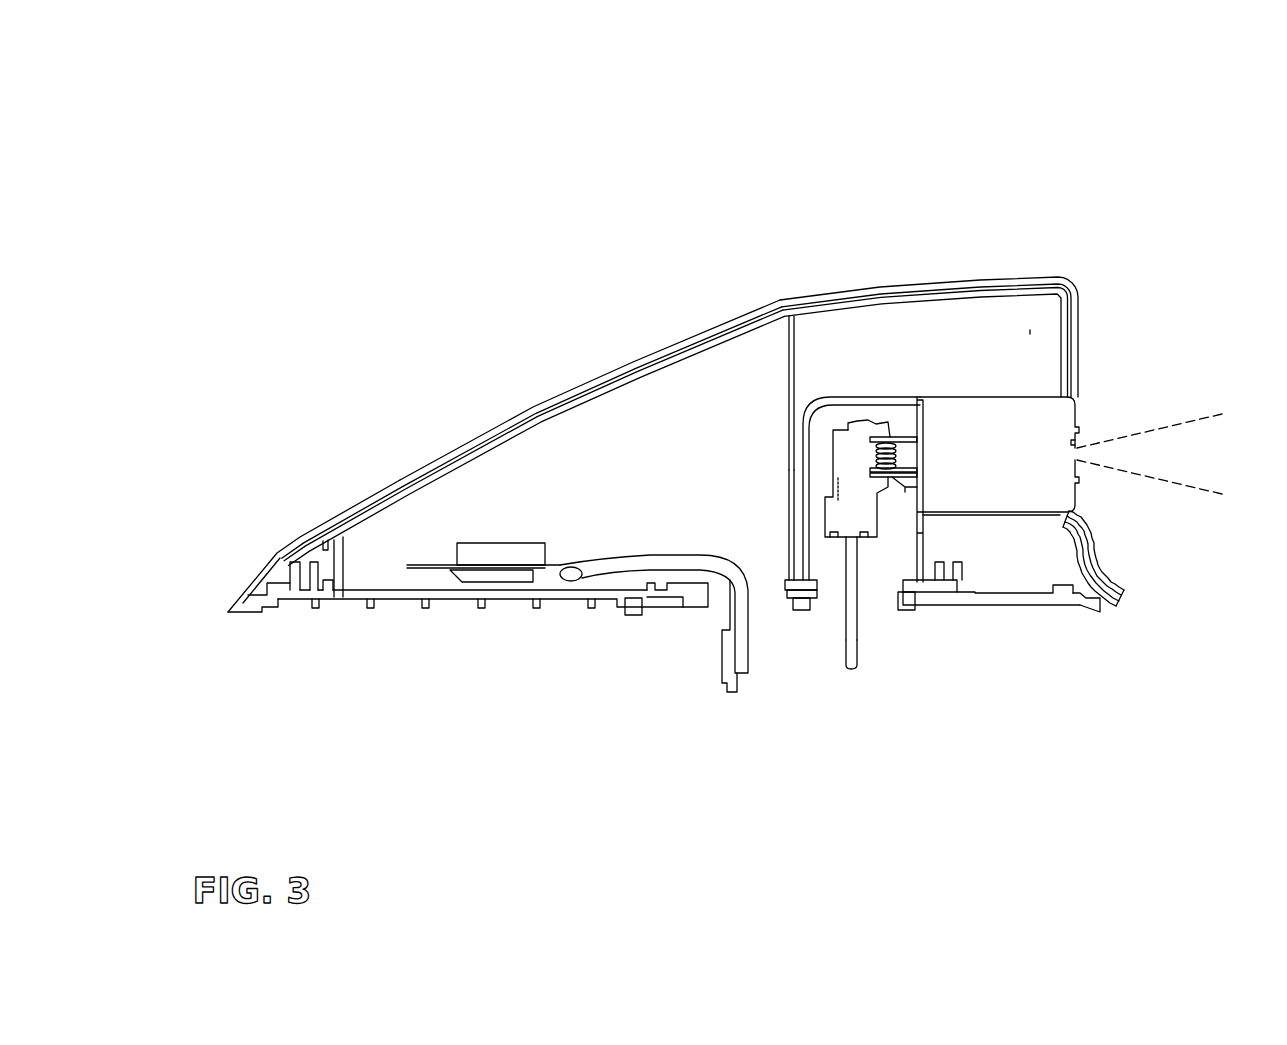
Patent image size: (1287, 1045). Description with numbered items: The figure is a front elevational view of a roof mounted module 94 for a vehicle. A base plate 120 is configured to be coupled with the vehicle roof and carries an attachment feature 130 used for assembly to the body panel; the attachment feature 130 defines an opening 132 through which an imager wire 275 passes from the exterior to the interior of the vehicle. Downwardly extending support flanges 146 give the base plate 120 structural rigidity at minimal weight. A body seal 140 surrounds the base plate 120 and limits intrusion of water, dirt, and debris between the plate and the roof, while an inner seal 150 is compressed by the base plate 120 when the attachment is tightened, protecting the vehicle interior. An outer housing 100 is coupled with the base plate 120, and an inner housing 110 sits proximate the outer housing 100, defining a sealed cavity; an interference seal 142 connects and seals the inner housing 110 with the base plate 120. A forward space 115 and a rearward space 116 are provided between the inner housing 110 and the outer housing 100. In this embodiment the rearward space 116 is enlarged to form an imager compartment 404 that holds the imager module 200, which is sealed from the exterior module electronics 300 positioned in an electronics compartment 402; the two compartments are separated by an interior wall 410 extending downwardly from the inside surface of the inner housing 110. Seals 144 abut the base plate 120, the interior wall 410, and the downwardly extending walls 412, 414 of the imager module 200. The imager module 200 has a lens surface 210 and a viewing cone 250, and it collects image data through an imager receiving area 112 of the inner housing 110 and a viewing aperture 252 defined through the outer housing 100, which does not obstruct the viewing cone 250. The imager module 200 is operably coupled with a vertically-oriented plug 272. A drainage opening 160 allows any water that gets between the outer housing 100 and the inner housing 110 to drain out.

The roof mounted module 94 is at (848, 190).
The outer housing 100 is at (310, 530).
The inner housing 110 is at (987, 293).
The imager receiving area 112 is at (1082, 522).
The forward space 115 is at (298, 553).
The rearward space 116 is at (1030, 328).
The base plate 120 is at (405, 600).
The attachment feature 130 is at (693, 600).
The opening 132 is at (850, 672).
The body seal 140 is at (258, 610).
The interference seal 142 is at (333, 600).
The seals 144 is at (780, 586).
The support flanges 146 is at (480, 604).
The inner seal 150 is at (632, 614).
The drainage opening 160 is at (1103, 600).
The imager module 200 is at (1015, 417).
The lens surface 210 is at (1077, 443).
The viewing cone 250 is at (1190, 438).
The viewing aperture 252 is at (1062, 513).
The vertically-oriented plug 272 is at (848, 443).
The imager wire 275 is at (828, 602).
The exterior module electronics 300 is at (518, 562).
The electronics compartment 402 is at (563, 445).
The imager compartment 404 is at (914, 330).
The interior wall 410 is at (797, 390).
The downwardly extending wall 412 is at (786, 574).
The downwardly extending wall 414 is at (920, 533).